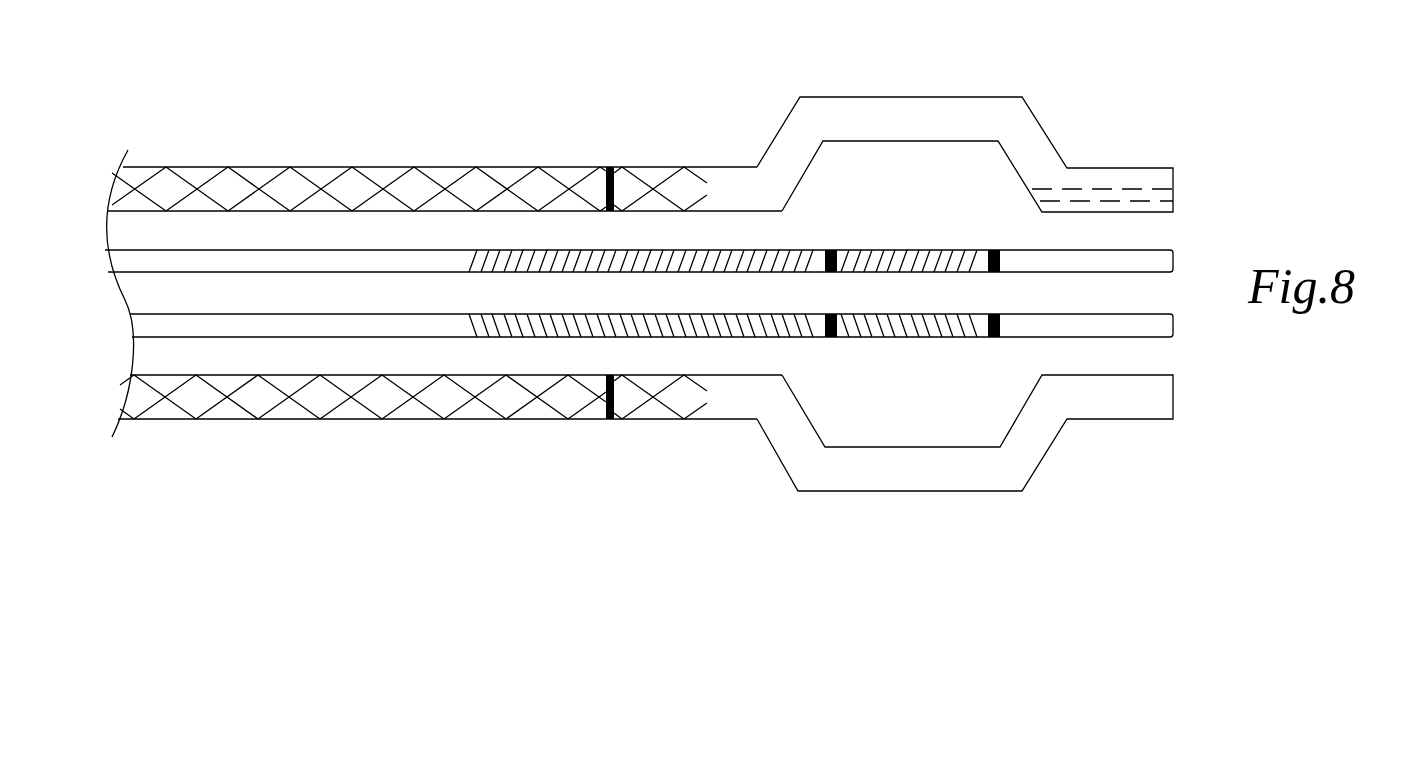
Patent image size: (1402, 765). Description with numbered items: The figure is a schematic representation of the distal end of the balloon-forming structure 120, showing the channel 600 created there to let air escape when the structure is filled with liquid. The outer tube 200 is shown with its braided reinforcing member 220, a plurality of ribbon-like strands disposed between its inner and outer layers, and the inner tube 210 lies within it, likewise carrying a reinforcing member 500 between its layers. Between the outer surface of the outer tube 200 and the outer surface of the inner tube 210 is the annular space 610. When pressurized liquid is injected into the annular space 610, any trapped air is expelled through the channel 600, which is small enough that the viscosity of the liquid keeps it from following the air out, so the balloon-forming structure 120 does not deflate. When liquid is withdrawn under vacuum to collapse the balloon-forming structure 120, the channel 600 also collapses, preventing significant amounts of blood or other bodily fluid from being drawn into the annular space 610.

The outer tube 200 is at (319, 167).
The braided reinforcing member 220 is at (353, 400).
The annular space 610 is at (377, 230).
The reinforcing member 500 is at (725, 252).
The inner tube 210 is at (552, 337).
The channel 600 is at (1100, 193).
The balloon-forming structure 120 is at (1133, 505).